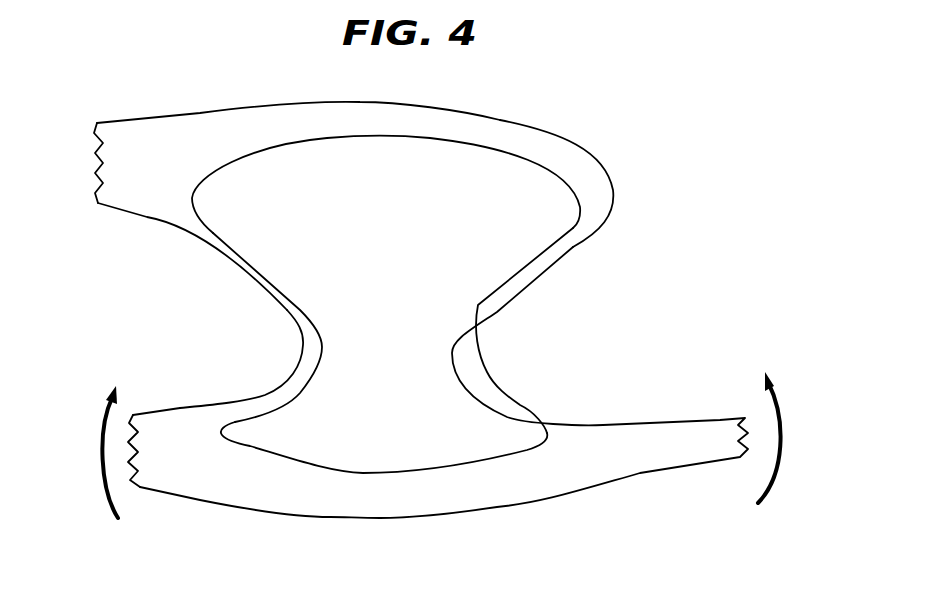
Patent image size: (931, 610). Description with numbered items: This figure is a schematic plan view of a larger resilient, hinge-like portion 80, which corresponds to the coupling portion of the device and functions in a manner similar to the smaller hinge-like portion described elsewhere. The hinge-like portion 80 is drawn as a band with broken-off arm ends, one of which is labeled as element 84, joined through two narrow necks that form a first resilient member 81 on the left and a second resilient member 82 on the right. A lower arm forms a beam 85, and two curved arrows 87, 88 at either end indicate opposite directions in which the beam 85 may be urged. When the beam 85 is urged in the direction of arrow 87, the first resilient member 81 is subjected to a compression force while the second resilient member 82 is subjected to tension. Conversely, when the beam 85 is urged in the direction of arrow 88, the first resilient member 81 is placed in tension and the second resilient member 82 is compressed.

The larger resilient, hinge-like portion 80 is at (407, 586).
The first resilient member 81 is at (305, 347).
The second resilient member 82 is at (473, 332).
The upper left arm portion 84 is at (198, 133).
The beam 85 is at (237, 500).
The arrow 87 is at (110, 503).
The arrow 88 is at (782, 462).